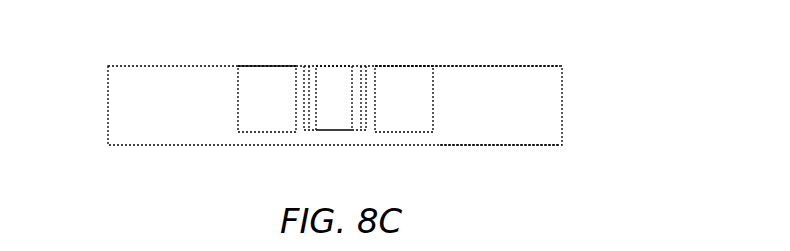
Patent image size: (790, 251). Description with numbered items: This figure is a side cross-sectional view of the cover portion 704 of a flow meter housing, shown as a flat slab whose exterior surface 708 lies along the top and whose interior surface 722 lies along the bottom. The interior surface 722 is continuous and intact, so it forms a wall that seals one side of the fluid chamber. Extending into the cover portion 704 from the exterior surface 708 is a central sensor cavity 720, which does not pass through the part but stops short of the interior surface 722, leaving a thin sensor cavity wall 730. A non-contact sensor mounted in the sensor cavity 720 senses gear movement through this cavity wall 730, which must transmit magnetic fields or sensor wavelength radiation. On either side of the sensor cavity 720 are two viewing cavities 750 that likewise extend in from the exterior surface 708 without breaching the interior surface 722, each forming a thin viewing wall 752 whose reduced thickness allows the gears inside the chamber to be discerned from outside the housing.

The cover portion 704 is at (154, 100).
The exterior surface 708 is at (488, 64).
The interior surface 722 is at (507, 146).
The sensor cavity 720 is at (333, 57).
The sensor cavity wall 730 is at (331, 136).
The viewing cavities 750 is at (263, 55).
The thin viewing wall 752 is at (264, 137).